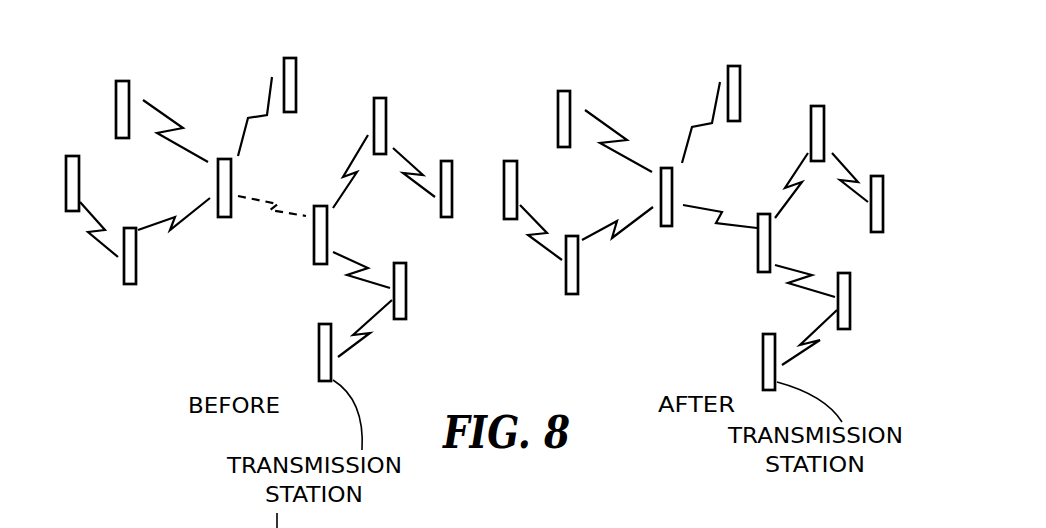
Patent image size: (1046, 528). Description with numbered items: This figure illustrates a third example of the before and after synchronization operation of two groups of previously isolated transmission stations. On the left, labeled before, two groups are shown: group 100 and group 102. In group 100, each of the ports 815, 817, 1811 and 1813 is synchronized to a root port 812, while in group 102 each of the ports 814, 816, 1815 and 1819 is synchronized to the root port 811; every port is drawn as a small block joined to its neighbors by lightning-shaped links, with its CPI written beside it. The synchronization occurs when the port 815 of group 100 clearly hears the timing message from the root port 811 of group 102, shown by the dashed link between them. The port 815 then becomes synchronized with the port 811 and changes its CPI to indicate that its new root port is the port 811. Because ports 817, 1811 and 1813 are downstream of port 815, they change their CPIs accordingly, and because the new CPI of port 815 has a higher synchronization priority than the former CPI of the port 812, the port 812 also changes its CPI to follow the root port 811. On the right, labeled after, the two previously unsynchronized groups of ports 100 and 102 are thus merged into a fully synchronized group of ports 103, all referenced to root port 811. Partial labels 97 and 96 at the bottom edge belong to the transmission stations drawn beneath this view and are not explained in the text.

The group of transmission stations 100 is at (208, 51).
The group of transmission stations 102 is at (440, 312).
The fully synchronized group of ports 103 is at (835, 49).
The root port 811 is at (313, 243).
The root port 812 is at (113, 97).
The port 814 is at (425, 257).
The port 815 is at (232, 183).
The port 816 is at (415, 92).
The port 817 is at (318, 48).
The port 1811 is at (123, 273).
The port 1813 is at (117, 178).
The port 1815 is at (470, 148).
The port 1819 is at (318, 367).
The node 97 is at (421, 521).
The node 96 is at (791, 523).